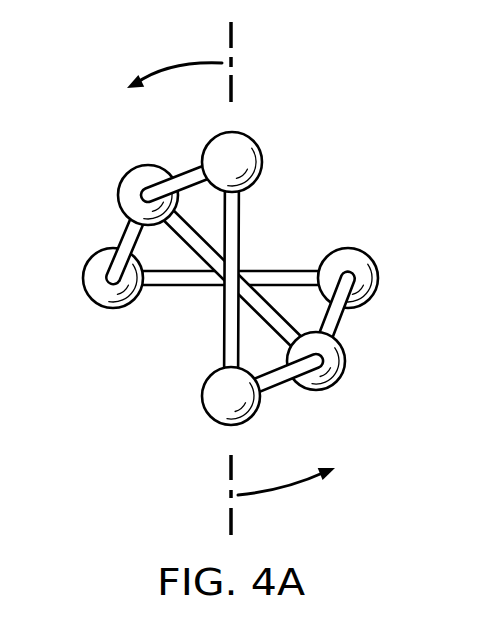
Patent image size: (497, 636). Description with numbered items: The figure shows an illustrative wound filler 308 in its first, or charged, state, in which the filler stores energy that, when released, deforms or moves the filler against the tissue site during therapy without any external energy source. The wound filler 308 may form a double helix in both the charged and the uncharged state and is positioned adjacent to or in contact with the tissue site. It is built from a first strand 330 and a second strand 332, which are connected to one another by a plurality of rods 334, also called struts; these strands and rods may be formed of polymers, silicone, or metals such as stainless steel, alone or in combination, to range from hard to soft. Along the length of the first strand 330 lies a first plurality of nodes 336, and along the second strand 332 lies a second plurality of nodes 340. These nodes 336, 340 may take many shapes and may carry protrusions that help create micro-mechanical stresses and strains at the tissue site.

The wound filler 308 is at (318, 110).
The first strand 330 is at (181, 174).
The second strand 332 is at (340, 322).
The rods 334 is at (277, 271).
The first plurality of nodes 336 is at (118, 194).
The second plurality of nodes 340 is at (347, 248).